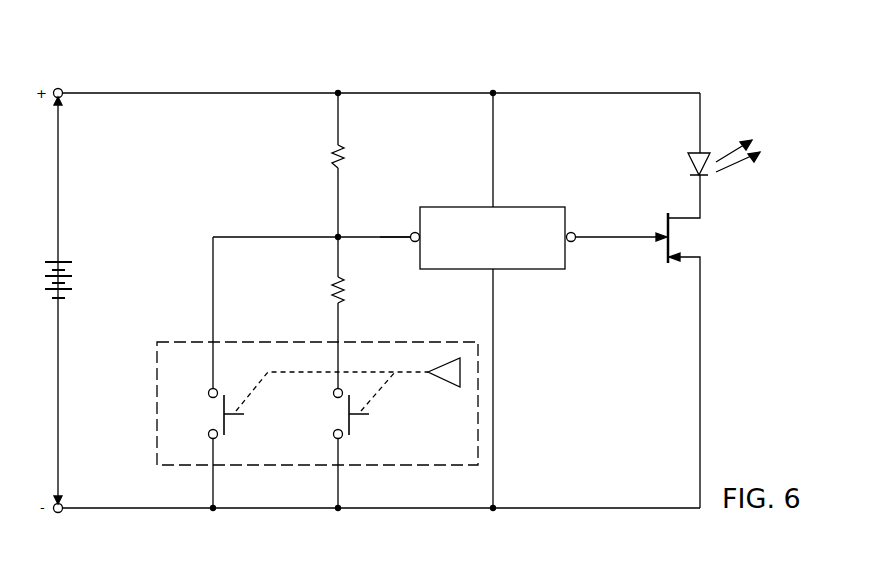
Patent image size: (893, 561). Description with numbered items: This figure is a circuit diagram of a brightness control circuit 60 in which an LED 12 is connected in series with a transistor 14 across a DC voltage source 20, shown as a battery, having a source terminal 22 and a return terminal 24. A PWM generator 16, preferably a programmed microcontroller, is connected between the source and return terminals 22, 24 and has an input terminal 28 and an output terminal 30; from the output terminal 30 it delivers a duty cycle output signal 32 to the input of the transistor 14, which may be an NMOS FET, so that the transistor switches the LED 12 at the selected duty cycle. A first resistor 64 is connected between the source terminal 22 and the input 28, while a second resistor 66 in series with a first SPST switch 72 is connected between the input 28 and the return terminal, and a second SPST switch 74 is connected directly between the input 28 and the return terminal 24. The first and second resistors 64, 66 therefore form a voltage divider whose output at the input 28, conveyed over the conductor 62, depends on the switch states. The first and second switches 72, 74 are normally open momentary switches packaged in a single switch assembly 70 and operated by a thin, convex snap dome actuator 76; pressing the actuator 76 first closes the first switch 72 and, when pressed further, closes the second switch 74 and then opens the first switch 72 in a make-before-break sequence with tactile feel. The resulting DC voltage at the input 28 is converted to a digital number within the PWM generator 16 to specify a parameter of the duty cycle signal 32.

The LED 12 is at (688, 163).
The transistor 14 is at (664, 228).
The PWM generator 16 is at (522, 206).
The DC voltage source 20 is at (54, 260).
The source terminal 22 is at (55, 88).
The return terminal 24 is at (54, 514).
The input terminal 28 is at (412, 233).
The output terminal 30 is at (575, 231).
The duty cycle output signal 32 is at (614, 240).
The brightness control circuit 60 is at (335, 235).
The input conductor 62 is at (385, 241).
The first resistor R1 64 is at (336, 152).
The second resistor R2 66 is at (336, 290).
The switch assembly 70 is at (188, 338).
The first SPST switch S1 72 is at (353, 424).
The second SPST switch S2 74 is at (228, 424).
The snap dome actuator 76 is at (446, 380).